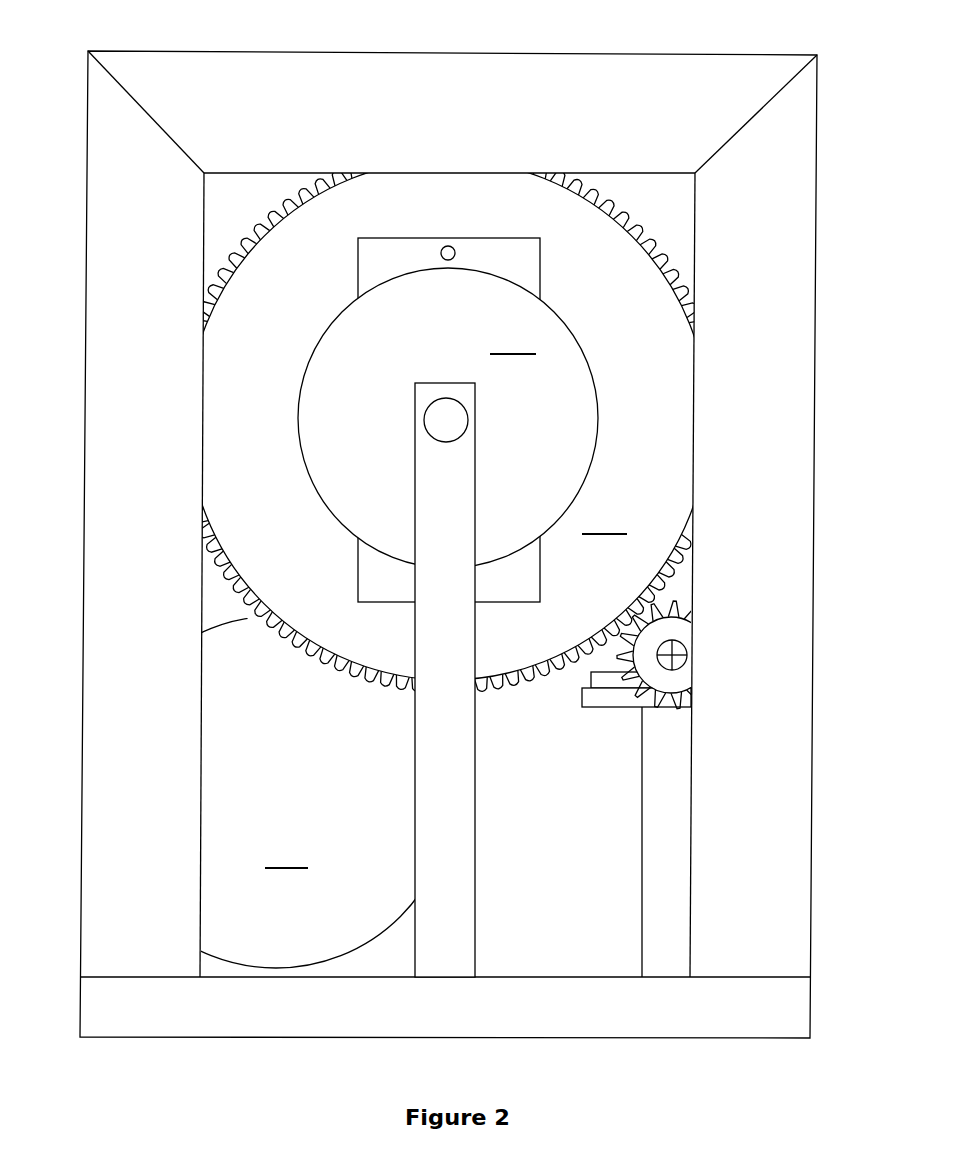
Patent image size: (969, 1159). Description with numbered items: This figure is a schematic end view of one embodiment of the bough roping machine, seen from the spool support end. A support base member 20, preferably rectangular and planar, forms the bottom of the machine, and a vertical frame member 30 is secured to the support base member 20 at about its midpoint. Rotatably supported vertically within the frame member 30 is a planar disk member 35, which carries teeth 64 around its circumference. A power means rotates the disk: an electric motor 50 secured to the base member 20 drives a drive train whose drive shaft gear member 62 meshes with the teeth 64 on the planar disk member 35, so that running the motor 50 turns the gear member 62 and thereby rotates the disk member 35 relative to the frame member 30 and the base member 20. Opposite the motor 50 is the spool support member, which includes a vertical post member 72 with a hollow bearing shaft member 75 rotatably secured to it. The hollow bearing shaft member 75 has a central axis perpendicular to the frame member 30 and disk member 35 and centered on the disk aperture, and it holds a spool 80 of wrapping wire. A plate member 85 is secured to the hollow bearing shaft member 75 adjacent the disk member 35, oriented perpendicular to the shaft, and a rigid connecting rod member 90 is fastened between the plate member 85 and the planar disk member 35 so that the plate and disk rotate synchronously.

The support base member 20 is at (495, 1000).
The vertical frame member 30 is at (468, 72).
The planar disk member 35 is at (441, 451).
The electric motor 50 is at (276, 792).
The drive shaft gear member 62 is at (680, 633).
The teeth 64 is at (605, 202).
The vertical post member 72 is at (458, 871).
The hollow bearing shaft member 75 is at (463, 408).
The spool 80 is at (448, 418).
The plate member 85 is at (398, 588).
The rigid connecting rod member 90 is at (449, 246).